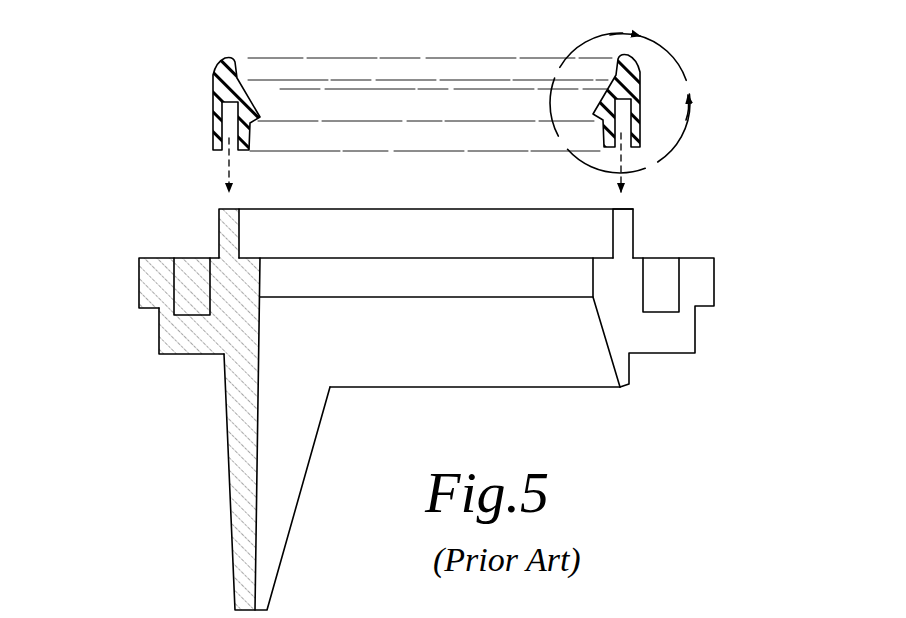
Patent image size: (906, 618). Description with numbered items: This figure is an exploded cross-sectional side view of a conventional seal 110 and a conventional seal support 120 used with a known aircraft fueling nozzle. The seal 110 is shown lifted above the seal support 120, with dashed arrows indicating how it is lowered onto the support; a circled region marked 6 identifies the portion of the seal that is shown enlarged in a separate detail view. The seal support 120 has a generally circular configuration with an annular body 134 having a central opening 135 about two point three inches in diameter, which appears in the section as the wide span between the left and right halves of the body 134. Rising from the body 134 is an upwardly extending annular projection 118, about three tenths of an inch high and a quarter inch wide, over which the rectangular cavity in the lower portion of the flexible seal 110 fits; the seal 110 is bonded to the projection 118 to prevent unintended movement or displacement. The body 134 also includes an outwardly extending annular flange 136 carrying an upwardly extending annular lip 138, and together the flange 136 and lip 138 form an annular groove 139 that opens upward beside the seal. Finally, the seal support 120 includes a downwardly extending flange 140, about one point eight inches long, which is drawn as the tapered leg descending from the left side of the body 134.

The seal 110 is at (162, 76).
The seal support 120 is at (750, 186).
The central opening 135 is at (425, 199).
The annular projection 118 is at (625, 220).
The annular body 134 is at (627, 280).
The annular groove 139 is at (191, 268).
The annular lip 138 is at (148, 287).
The annular flange 136 is at (168, 342).
The downwardly extending flange 140 is at (240, 515).
The detail view circle of FIG. 6 is at (620, 103).